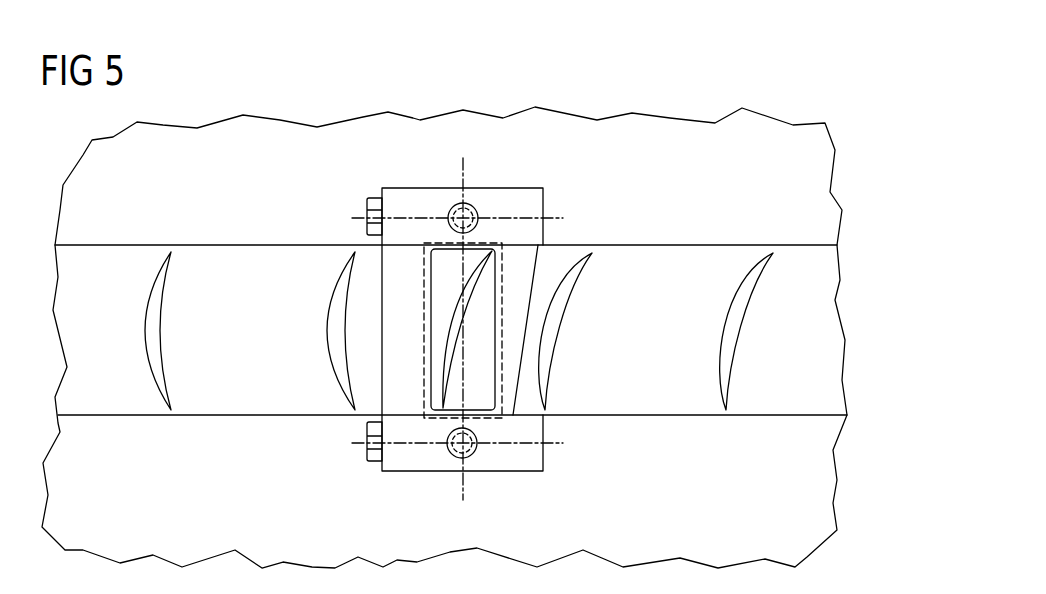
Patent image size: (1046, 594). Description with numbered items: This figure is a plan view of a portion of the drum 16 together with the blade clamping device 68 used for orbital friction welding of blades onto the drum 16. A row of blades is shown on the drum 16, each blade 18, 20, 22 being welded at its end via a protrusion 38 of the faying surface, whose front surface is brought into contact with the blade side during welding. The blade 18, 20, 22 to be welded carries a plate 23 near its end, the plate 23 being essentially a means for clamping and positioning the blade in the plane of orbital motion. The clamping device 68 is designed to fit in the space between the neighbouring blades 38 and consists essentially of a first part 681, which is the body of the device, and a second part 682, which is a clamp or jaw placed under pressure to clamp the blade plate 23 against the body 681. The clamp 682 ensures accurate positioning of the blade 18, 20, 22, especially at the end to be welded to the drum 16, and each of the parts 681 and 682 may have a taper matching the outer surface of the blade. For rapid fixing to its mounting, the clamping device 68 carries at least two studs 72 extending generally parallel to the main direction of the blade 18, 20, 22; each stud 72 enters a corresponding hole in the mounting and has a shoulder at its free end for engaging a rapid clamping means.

The drum 16 is at (678, 126).
The protrusion of the faying surface 38 is at (333, 323).
The blade clamping device 68 is at (482, 322).
The first part 681 is at (519, 197).
The second part 682 is at (398, 280).
The studs 72 is at (468, 203).
The plate 23 is at (482, 402).
The blade 18 is at (557, 329).
The blade 20 is at (557, 329).
The blade 22 is at (457, 358).